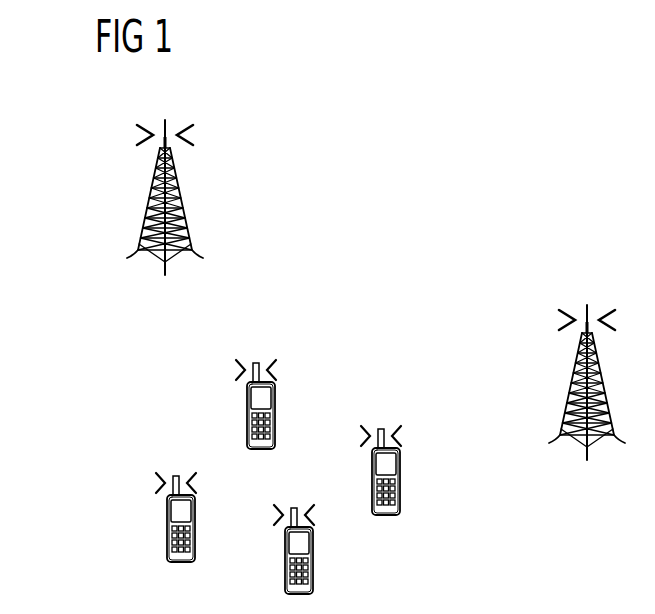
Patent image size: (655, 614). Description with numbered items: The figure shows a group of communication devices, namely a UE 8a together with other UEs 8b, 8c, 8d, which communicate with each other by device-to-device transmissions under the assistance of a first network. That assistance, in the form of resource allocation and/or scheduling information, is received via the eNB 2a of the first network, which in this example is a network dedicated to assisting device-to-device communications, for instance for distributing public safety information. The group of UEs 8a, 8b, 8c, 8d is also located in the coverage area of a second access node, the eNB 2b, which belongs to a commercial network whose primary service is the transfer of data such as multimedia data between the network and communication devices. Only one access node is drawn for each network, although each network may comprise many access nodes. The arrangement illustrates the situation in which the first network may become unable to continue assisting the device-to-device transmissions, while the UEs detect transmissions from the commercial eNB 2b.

The eNB of the first network 2a is at (150, 199).
The eNB of the second network 2b is at (571, 383).
The UE 8a is at (247, 420).
The UE 8b is at (167, 530).
The UE 8c is at (313, 562).
The UE 8d is at (400, 483).